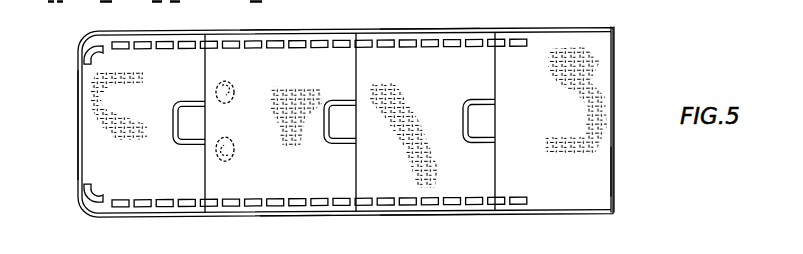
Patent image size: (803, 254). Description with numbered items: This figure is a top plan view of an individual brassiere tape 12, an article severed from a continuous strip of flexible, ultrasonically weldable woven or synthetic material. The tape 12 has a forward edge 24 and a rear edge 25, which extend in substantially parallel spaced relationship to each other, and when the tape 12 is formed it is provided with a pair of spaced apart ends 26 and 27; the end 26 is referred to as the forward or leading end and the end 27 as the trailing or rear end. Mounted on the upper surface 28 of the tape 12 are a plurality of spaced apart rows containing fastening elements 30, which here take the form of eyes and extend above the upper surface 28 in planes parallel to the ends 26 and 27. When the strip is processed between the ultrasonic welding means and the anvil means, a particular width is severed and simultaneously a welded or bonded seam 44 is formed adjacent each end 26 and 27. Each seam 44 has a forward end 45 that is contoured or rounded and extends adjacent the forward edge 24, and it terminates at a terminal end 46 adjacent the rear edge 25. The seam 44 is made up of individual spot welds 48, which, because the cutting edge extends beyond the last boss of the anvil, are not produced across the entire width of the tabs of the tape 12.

The brassiere tape 12 is at (614, 85).
The forward edge 24 is at (78, 150).
The rear edge 25 is at (614, 183).
The forward end 26 is at (310, 213).
The rear end 27 is at (255, 31).
The upper surface 28 is at (100, 88).
The fastening elements 30 is at (183, 146).
The welded seam 44 is at (432, 30).
The forward end of seam 45 is at (88, 42).
The terminal end of seam 46 is at (614, 30).
The spot welds 48 is at (163, 43).